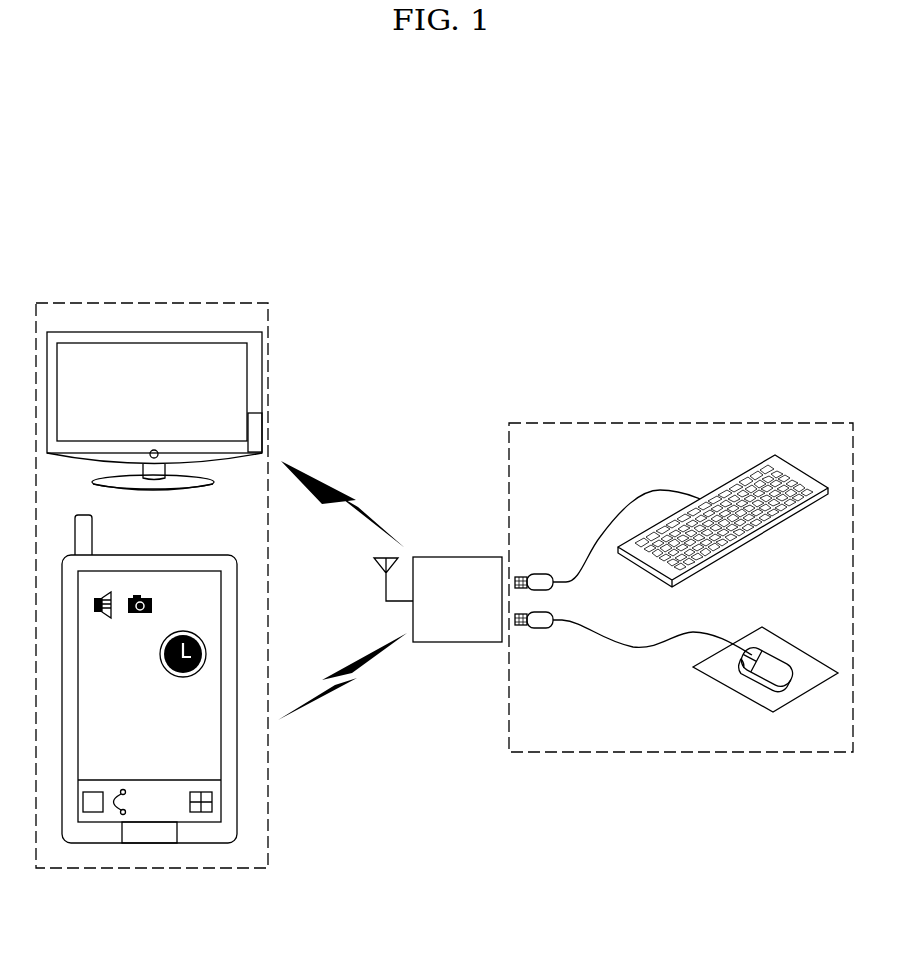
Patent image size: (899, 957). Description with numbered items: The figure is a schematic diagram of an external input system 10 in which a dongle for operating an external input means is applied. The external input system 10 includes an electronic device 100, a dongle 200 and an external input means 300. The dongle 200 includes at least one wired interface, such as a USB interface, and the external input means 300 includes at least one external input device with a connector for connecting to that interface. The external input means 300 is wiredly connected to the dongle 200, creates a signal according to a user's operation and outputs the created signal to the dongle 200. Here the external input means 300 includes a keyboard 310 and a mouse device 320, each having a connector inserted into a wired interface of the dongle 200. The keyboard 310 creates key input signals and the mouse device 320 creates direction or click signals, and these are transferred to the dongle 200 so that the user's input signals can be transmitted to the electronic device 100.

The external input system 10 is at (419, 264).
The electronic device 100 is at (145, 303).
The dongle 200 is at (438, 557).
The external input means 300 is at (682, 423).
The keyboard 310 is at (752, 540).
The mouse device 320 is at (787, 638).